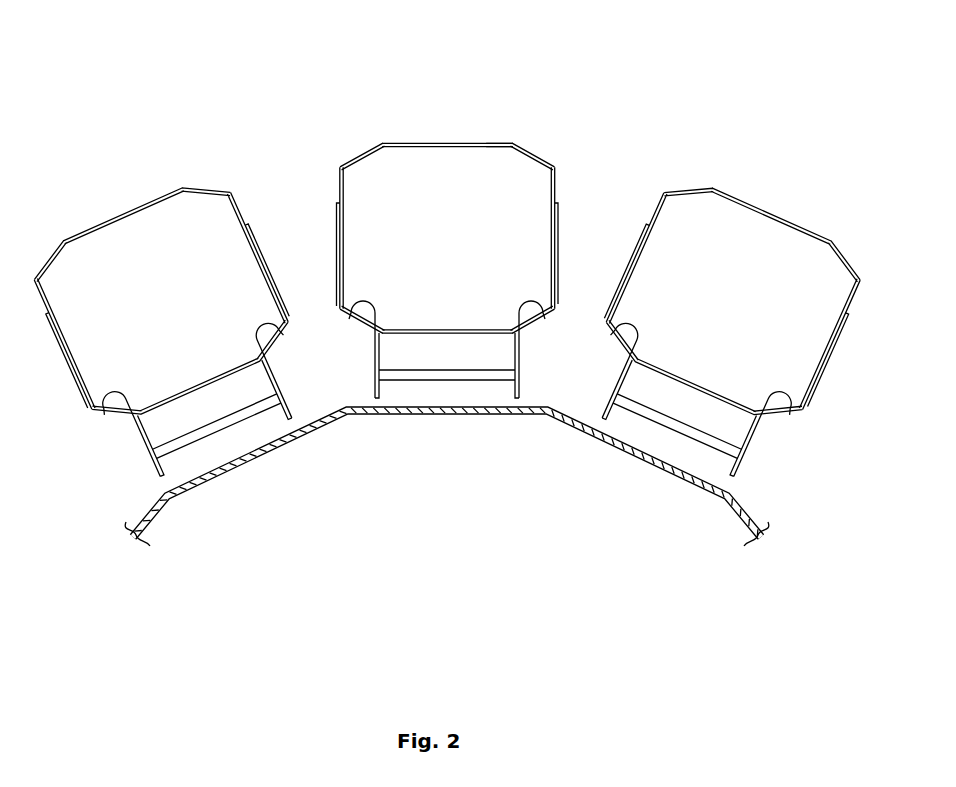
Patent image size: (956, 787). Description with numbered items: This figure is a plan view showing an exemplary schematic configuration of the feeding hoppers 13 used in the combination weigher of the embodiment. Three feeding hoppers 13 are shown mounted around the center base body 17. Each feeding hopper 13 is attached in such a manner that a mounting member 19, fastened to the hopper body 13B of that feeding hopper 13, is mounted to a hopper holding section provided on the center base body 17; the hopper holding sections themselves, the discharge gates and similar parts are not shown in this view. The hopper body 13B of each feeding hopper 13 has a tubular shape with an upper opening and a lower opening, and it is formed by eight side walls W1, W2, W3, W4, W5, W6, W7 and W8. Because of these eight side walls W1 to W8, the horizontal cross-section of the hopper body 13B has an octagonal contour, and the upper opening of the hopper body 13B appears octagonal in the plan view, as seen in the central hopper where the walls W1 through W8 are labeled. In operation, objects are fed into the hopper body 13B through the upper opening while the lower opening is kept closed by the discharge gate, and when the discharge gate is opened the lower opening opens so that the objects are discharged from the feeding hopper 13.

The feeding hopper 13 is at (447, 260).
The hopper body 13B is at (487, 142).
The center base body 17 is at (747, 505).
The mounting member 19 is at (376, 357).
The side wall W1 is at (559, 185).
The side wall W2 is at (535, 156).
The side wall W3 is at (448, 142).
The side wall W4 is at (362, 155).
The side wall W5 is at (340, 190).
The side wall W6 is at (349, 320).
The side wall W7 is at (448, 334).
The side wall W8 is at (546, 320).